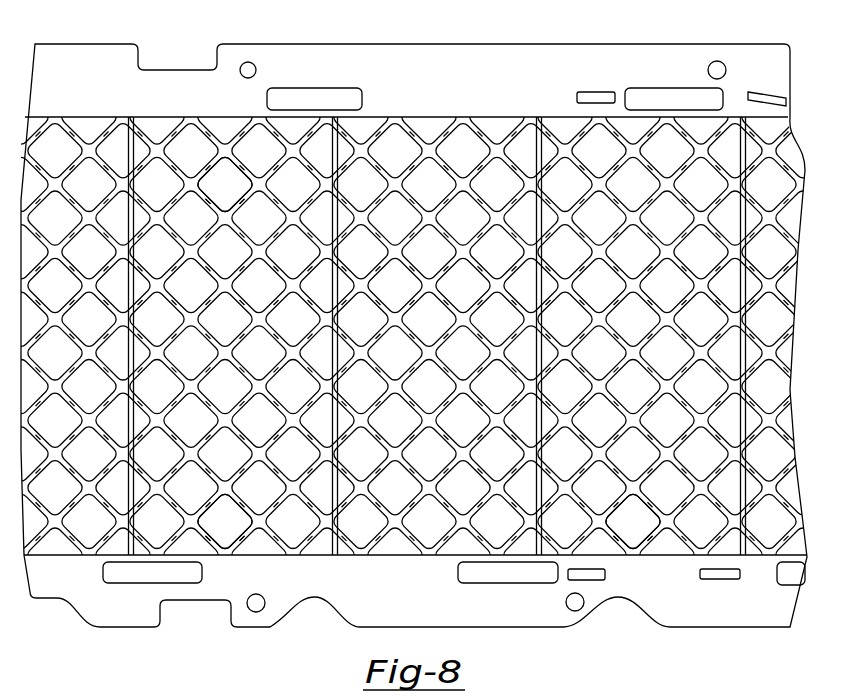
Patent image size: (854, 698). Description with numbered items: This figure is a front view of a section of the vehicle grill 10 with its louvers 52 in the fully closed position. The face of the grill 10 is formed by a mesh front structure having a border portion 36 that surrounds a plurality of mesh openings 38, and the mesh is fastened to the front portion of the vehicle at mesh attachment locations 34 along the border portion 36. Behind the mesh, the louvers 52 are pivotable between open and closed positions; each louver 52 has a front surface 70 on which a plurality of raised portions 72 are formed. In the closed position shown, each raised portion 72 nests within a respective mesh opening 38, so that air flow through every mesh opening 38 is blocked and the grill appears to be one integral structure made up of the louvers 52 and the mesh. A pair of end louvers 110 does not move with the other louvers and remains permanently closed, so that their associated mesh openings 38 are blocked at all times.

The grill 10 is at (487, 62).
The mesh attachment locations 34 is at (257, 65).
The border portion 36 is at (465, 617).
The mesh openings 38 is at (228, 525).
The louvers 52 is at (233, 183).
The front surface 70 is at (496, 518).
The raised portions 72 is at (630, 525).
The end louvers 110 is at (700, 143).